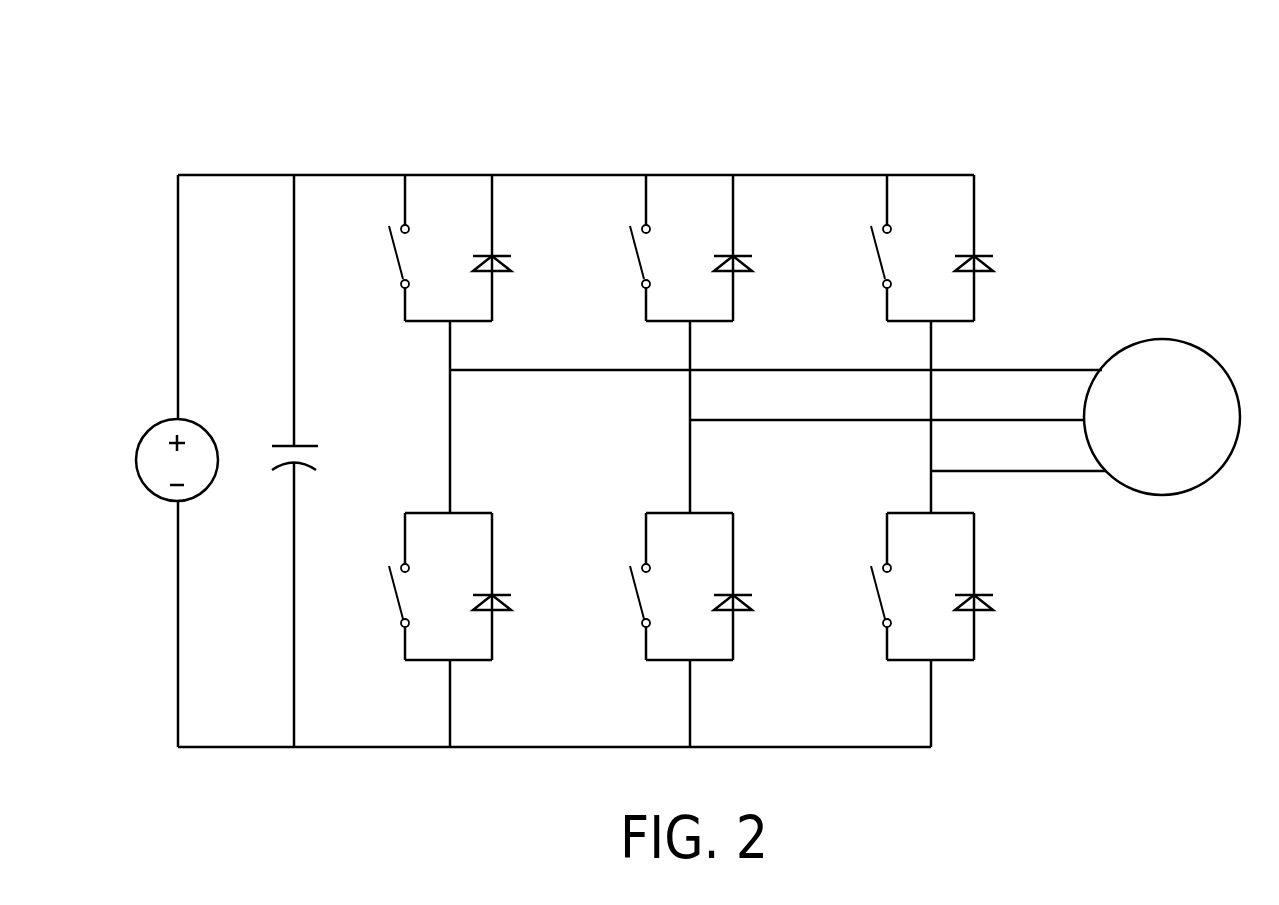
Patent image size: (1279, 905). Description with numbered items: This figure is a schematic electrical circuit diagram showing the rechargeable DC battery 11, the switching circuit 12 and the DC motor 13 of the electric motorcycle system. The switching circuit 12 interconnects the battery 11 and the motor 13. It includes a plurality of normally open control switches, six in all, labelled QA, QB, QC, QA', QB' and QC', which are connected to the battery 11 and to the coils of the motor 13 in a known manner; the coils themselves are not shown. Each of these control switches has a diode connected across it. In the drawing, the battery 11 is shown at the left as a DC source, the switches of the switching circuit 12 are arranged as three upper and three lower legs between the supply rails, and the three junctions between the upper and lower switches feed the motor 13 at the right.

The rechargeable DC battery 11 is at (140, 445).
The switching circuit 12 is at (798, 153).
The DC motor 13 is at (1160, 339).